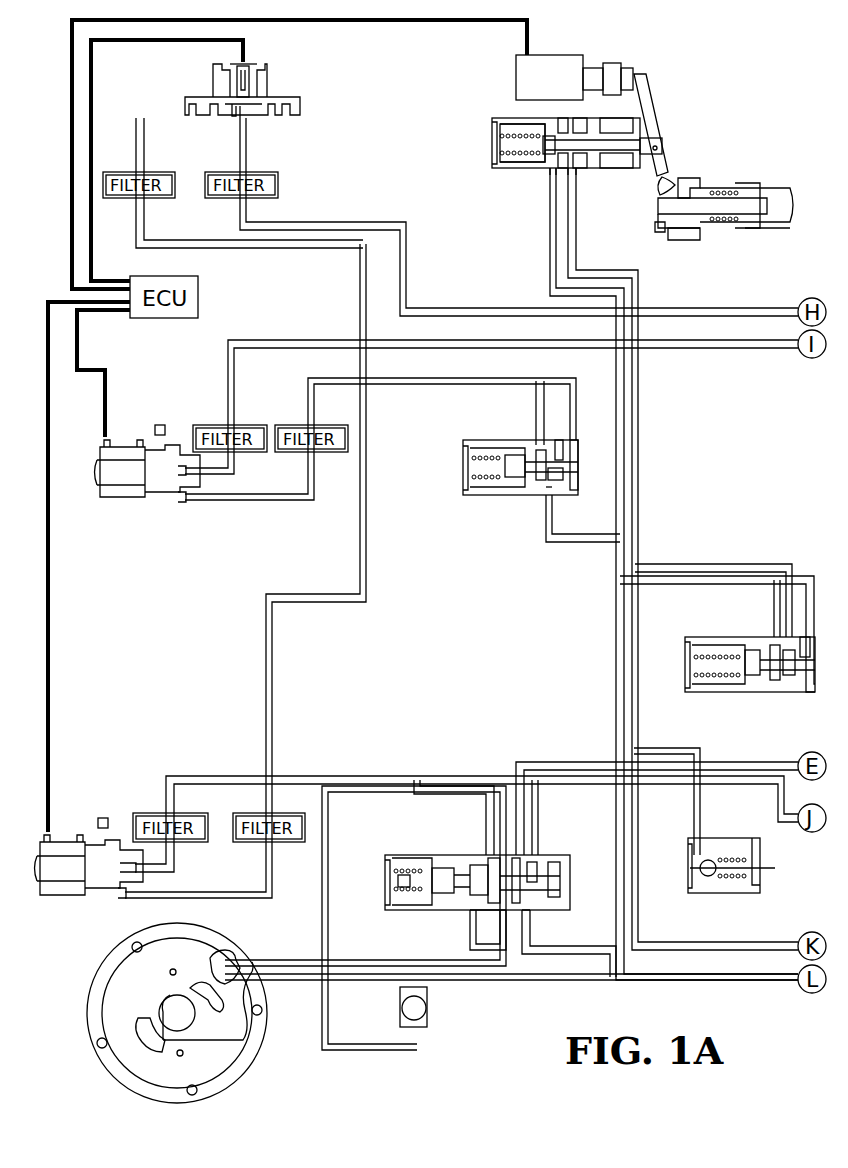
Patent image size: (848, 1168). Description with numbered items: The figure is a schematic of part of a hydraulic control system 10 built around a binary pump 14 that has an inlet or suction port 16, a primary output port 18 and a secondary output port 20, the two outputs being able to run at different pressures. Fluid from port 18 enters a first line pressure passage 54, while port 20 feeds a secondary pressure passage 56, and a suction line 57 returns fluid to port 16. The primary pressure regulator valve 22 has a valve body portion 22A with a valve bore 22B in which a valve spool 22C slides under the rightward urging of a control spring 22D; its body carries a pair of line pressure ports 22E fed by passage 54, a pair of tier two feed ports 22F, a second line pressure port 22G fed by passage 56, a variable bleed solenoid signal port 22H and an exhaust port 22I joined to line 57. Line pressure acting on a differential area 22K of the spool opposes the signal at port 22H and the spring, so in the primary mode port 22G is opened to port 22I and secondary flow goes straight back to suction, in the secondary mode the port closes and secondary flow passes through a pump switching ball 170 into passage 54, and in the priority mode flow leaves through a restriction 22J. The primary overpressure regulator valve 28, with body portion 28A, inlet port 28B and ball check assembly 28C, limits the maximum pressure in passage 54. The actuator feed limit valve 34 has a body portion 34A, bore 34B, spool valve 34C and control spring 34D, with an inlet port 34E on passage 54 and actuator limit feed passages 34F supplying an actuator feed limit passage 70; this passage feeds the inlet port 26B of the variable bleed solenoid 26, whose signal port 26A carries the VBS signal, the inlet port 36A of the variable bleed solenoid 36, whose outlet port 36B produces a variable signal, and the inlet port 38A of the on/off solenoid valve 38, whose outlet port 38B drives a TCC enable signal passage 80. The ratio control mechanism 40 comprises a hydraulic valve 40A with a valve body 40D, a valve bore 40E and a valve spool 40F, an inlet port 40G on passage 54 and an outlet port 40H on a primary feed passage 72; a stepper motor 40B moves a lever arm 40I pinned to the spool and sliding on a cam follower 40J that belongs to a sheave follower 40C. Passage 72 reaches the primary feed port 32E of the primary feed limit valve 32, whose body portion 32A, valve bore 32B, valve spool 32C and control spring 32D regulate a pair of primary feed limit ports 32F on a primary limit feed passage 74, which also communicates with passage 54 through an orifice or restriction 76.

The control system 10 is at (55, 152).
The binary pump 14 is at (143, 1003).
The inlet or suction port 16 is at (228, 958).
The primary pump output port 18 is at (186, 983).
The secondary output pump port 20 is at (137, 1018).
The primary pressure regulator valve 22 is at (473, 869).
The valve body portion 22A is at (420, 905).
The valve bore portion 22B is at (535, 868).
The valve spool 22C is at (438, 895).
The control spring 22D is at (400, 870).
The line pressure ports 22E is at (482, 905).
The tier two feed ports 22F is at (520, 858).
The second line pressure port 22G is at (488, 870).
The variable bleed solenoid signal port 22H is at (405, 858).
The suction or exhaust port 22I is at (518, 893).
The restriction 22J is at (492, 858).
The differential area 22K is at (464, 878).
The variable bleed solenoid 26 is at (90, 849).
The signal port 26A is at (132, 864).
The inlet port 26B is at (124, 898).
The primary overpressure regulator valve 28 is at (709, 856).
The valve body portion 28A is at (722, 848).
The inlet port 28B is at (694, 860).
The ball check assembly 28C is at (708, 880).
The primary feed limit valve 32 is at (736, 632).
The valve body portion 32A is at (710, 642).
The valve bore 32B is at (776, 682).
The valve spool 32C is at (755, 680).
The control spring 32D is at (705, 682).
The primary feed port 32E is at (793, 634).
The primary feed limit ports 32F is at (776, 648).
The actuator feed limit valve 34 is at (494, 442).
The valve body portion 34A is at (470, 450).
The valve bore 34B is at (528, 458).
The spool valve 34C is at (555, 482).
The control spring 34D is at (486, 462).
The inlet port 34E is at (547, 490).
The actuator limit feed passages 34F is at (548, 440).
The variable bleed solenoid 36 is at (150, 463).
The inlet port 36A is at (182, 504).
The outlet port 36B is at (183, 462).
The on/off solenoid valve 38 is at (274, 76).
The inlet port 38A is at (246, 118).
The outlet port 38B is at (230, 112).
The ratio control mechanism 40 is at (609, 130).
The hydraulic valve 40A is at (490, 114).
The stepper motor 40B is at (554, 68).
The sheave follower 40C is at (712, 168).
The valve body 40D is at (510, 124).
The valve bore 40E is at (520, 145).
The valve spool 40F is at (638, 150).
The inlet port 40G is at (552, 172).
The outlet port 40H is at (573, 172).
The lever arm 40I is at (662, 115).
The cam follower 40J is at (688, 178).
The first line pressure passage 54 is at (548, 268).
The secondary pressure passage 56 is at (332, 935).
The suction or inlet line 57 is at (300, 962).
The actuator feed limit passage 70 is at (360, 289).
The primary feed passage 72 is at (714, 562).
The primary limit feed passage 74 is at (632, 722).
The orifice or restriction 76 is at (628, 582).
The TCC enable signal passage 80 is at (140, 230).
The pump switching ball 170 is at (427, 1010).